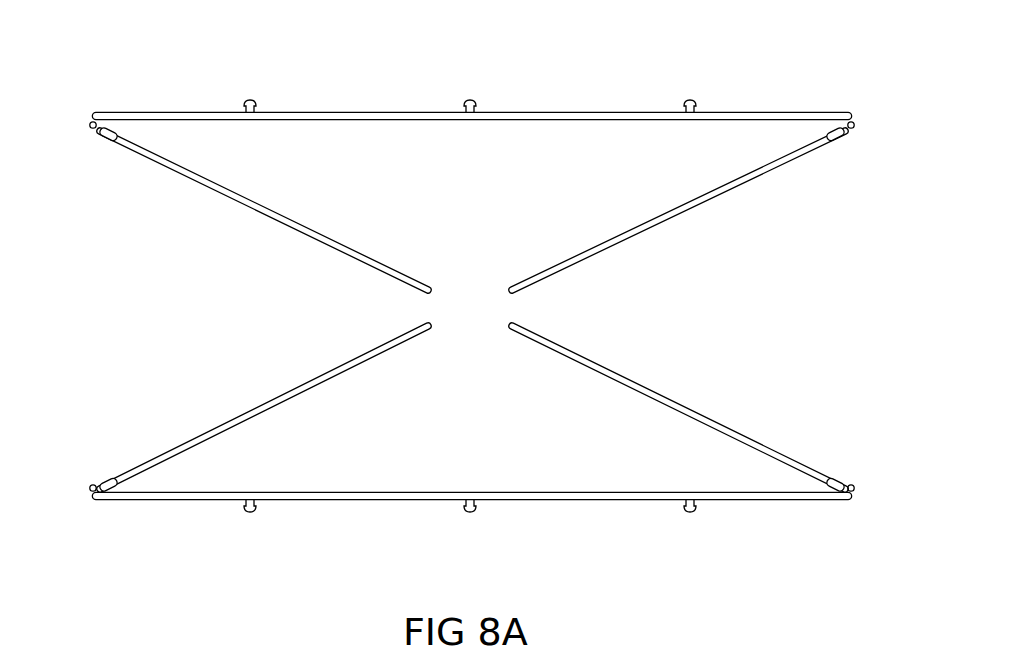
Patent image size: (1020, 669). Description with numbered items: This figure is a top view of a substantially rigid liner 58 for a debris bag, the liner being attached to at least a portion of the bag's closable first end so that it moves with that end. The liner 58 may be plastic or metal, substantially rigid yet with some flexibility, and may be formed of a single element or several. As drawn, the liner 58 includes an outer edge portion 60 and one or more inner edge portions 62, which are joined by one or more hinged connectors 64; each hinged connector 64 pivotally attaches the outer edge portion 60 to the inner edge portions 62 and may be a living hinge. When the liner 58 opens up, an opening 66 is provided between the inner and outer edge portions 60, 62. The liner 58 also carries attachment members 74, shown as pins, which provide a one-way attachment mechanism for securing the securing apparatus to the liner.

The substantially rigid liner 58 is at (469, 313).
The outer edge portion 60 is at (362, 112).
The inner edge portion 62 is at (330, 240).
The hinged connector 64 is at (90, 125).
The opening 66 is at (427, 197).
The attachment member 74 is at (250, 99).